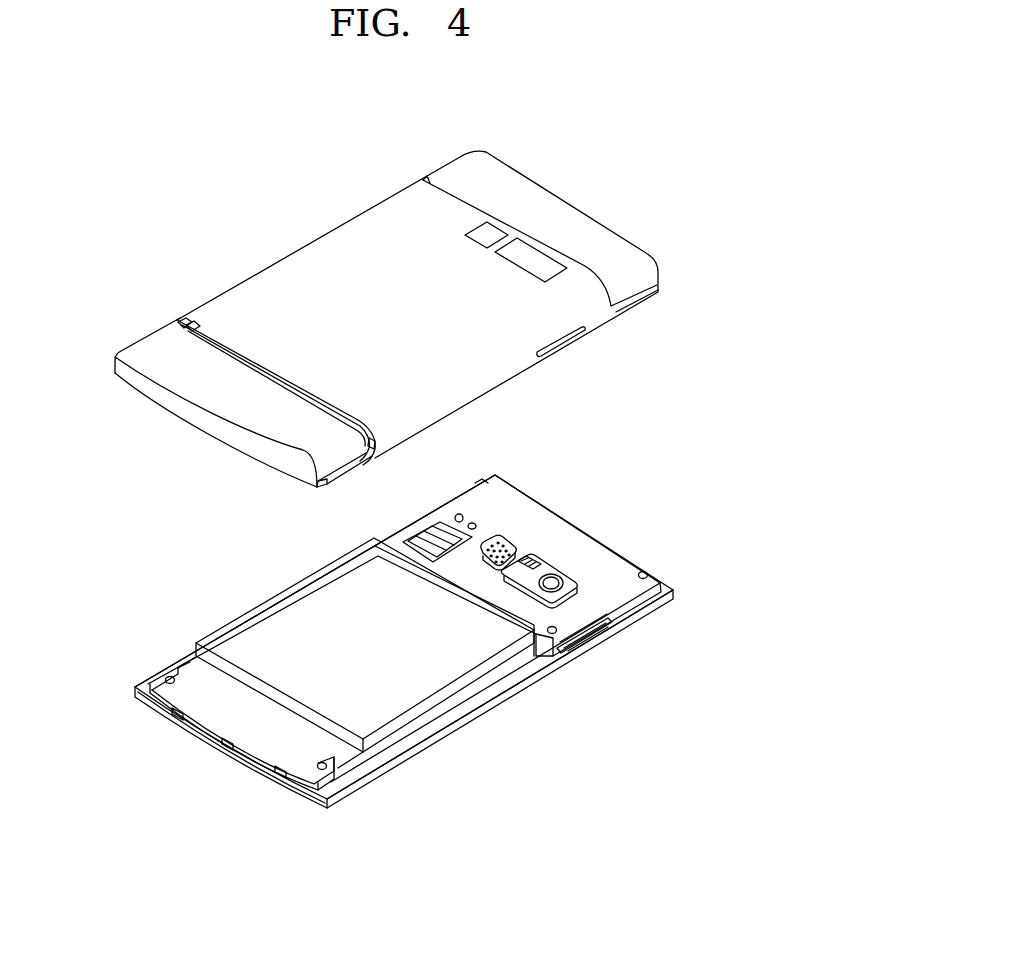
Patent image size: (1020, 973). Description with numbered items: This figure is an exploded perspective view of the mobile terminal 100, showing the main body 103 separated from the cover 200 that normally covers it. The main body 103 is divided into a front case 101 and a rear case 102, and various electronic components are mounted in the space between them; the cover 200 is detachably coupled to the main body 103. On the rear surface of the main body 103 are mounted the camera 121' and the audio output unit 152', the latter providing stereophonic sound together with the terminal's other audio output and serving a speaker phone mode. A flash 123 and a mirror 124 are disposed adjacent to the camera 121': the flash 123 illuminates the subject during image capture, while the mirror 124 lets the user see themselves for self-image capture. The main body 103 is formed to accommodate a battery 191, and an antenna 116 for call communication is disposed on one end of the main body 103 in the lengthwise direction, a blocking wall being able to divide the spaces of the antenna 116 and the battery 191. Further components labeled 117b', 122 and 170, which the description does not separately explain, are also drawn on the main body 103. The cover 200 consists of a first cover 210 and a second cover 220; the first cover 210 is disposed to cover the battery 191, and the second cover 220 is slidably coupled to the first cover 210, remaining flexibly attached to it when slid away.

The mobile terminal 100 is at (118, 483).
The front case 101 is at (650, 607).
The rear case 102 is at (630, 575).
The main body 103 is at (748, 545).
The antenna 116 is at (275, 738).
The hole 117b' is at (440, 504).
The camera 121' is at (601, 537).
The interface connectors 122 is at (172, 718).
The flash 123 is at (538, 563).
The mirror 124 is at (510, 567).
The audio output unit 152' is at (512, 498).
The interface unit 170 is at (588, 638).
The battery 191 is at (290, 610).
The cover 200 is at (213, 240).
The first cover 210 is at (213, 310).
The second cover 220 is at (161, 346).